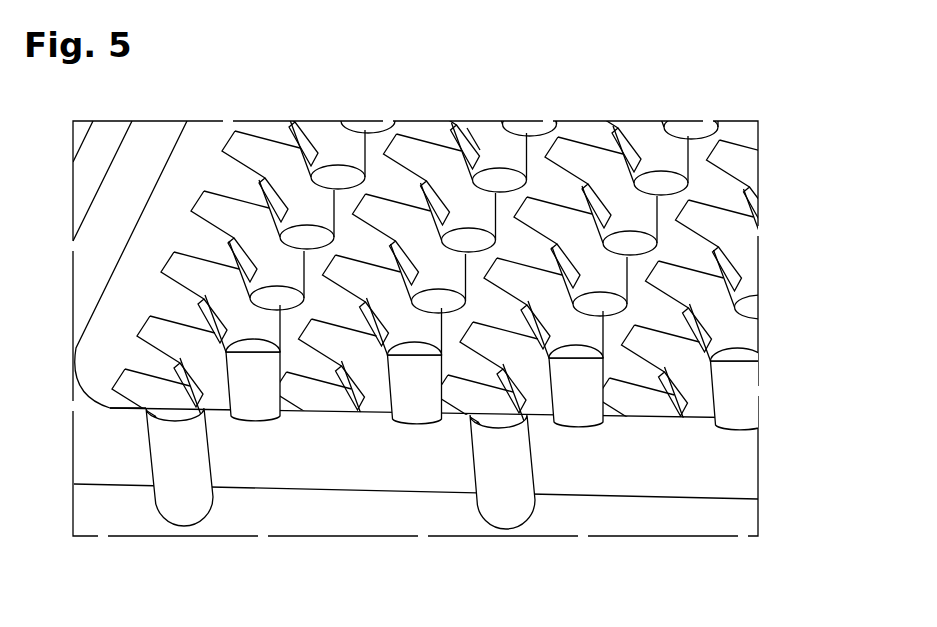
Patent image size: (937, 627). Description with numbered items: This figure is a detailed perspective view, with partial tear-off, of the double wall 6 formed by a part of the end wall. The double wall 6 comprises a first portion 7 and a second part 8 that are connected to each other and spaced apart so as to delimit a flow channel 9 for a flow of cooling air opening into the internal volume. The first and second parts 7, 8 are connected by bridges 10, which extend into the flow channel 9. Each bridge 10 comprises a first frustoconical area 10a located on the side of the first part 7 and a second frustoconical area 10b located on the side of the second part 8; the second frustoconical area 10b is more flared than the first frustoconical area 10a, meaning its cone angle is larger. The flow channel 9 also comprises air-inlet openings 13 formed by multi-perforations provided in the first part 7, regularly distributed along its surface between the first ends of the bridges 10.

The double wall 6 is at (506, 552).
The first portion 7 is at (598, 468).
The second part 8 is at (138, 160).
The flow channel 9 is at (642, 355).
The bridge 10 is at (496, 152).
The first frustoconical area 10a is at (640, 214).
The second frustoconical area 10b is at (598, 165).
The air-inlet openings 13 is at (183, 467).